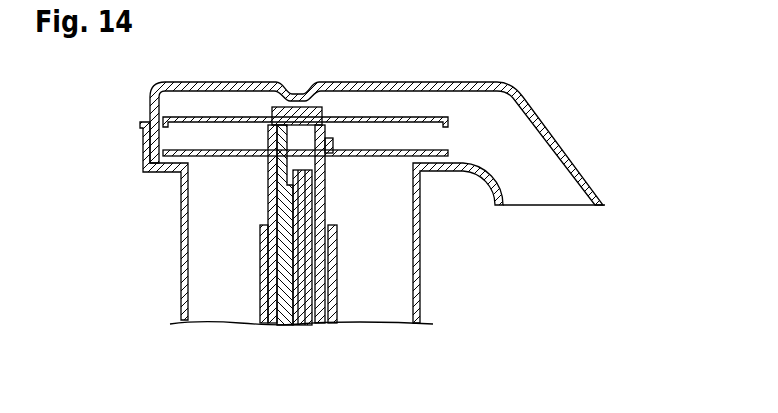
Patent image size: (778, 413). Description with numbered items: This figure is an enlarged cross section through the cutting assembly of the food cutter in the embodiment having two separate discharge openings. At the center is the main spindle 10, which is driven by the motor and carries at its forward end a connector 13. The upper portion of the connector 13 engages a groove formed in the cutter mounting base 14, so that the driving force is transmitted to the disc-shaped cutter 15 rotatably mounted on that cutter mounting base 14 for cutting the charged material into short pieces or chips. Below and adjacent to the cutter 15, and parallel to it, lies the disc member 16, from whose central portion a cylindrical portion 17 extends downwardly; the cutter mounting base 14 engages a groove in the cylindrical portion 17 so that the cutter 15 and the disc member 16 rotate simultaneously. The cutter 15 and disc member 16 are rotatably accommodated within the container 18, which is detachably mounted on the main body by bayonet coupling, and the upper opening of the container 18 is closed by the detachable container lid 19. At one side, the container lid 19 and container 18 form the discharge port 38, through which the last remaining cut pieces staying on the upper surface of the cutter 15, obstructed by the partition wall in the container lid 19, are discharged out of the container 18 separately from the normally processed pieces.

The main spindle 10 is at (306, 252).
The connector 13 is at (306, 236).
The cutter mounting base 14 is at (296, 105).
The disc-shaped cutter 15 is at (368, 120).
The disc member 16 is at (412, 153).
The cylindrical portion 17 is at (328, 202).
The container 18 is at (180, 255).
The container lid 19 is at (248, 86).
The discharge port 38 is at (556, 201).